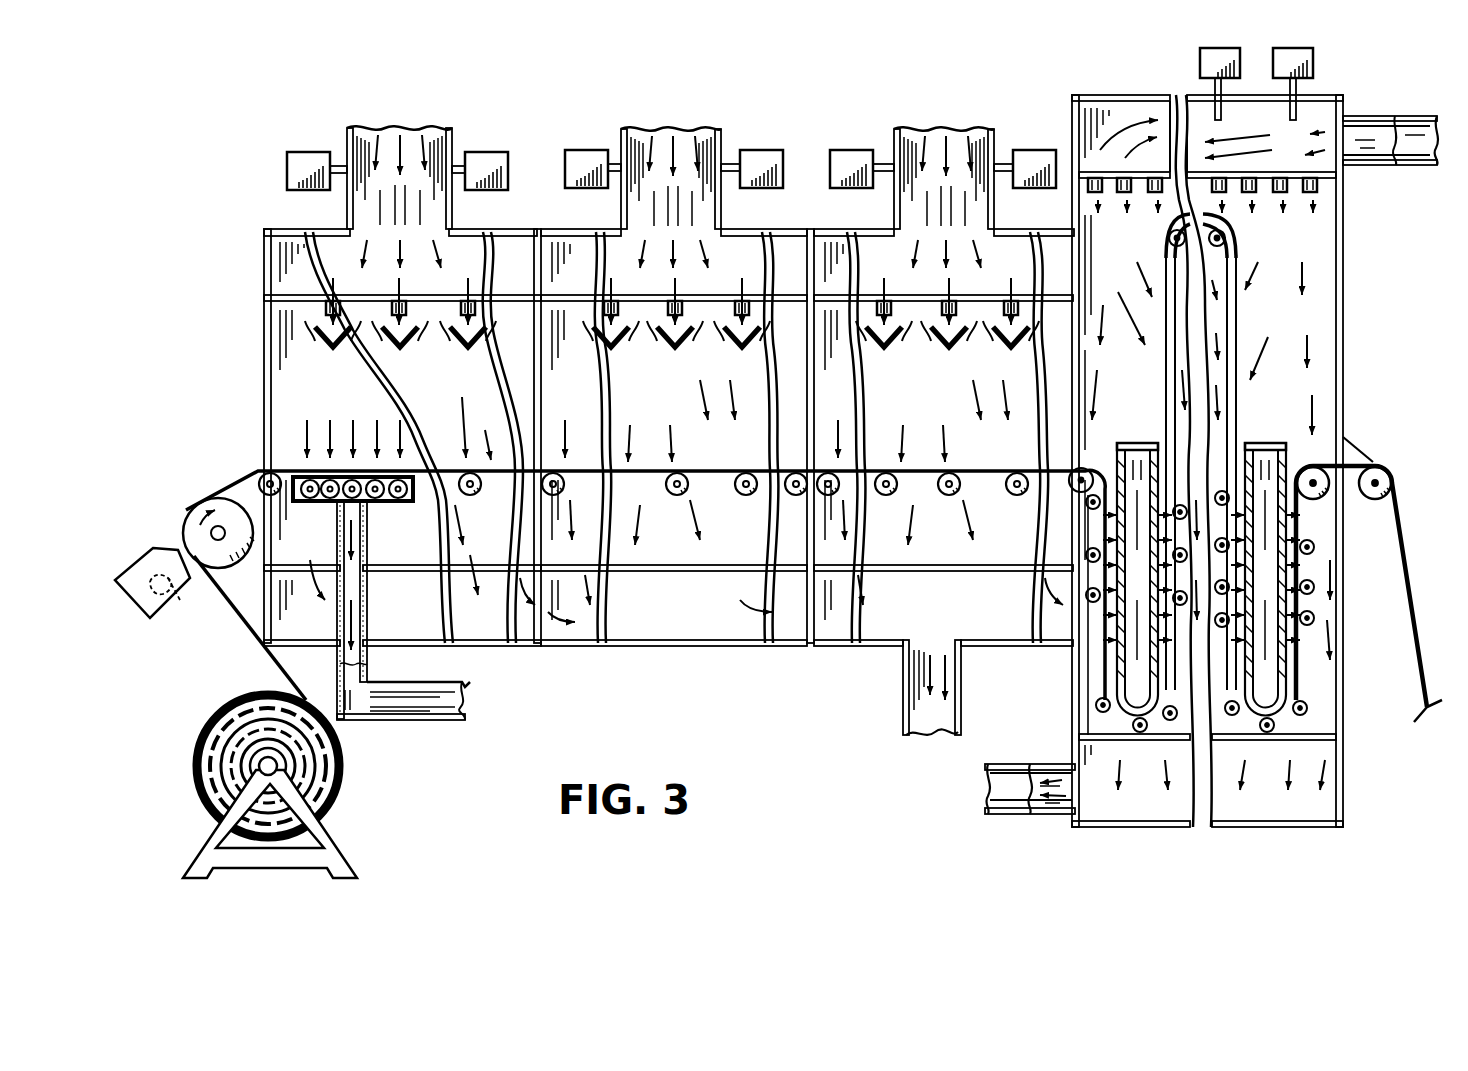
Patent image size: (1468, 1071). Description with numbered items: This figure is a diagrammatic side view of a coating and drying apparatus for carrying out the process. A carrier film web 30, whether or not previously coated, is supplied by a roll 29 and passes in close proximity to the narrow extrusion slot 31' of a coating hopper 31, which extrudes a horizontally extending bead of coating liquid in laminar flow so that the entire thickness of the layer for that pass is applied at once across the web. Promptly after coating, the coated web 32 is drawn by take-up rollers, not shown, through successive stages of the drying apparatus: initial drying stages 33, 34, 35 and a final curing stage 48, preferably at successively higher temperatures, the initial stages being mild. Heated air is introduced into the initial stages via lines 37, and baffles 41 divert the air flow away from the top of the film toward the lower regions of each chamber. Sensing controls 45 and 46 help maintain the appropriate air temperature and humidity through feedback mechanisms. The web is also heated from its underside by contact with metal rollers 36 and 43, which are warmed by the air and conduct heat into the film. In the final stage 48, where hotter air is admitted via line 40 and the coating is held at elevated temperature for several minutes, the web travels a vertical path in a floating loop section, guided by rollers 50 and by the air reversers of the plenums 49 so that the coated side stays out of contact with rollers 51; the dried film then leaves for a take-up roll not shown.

The roll 29 is at (345, 786).
The film web 30 is at (262, 628).
The coating hopper 31 is at (151, 567).
The extrusion slot 31' is at (180, 610).
The coated web 32 is at (215, 498).
The initial drying stage 33 is at (374, 424).
The initial drying stage 34 is at (692, 422).
The initial drying stage 35 is at (965, 418).
The metal roller 36 is at (330, 500).
The line 37 is at (360, 128).
The line 40 is at (1372, 120).
The baffle 41 is at (340, 352).
The metal roller 43 is at (472, 496).
The sensing control 45 is at (300, 152).
The sensing control 46 is at (490, 152).
The final curing stage 48 is at (1292, 326).
The plenum 49 is at (1130, 443).
The roller 50 is at (1166, 250).
The roller 51 is at (1076, 680).